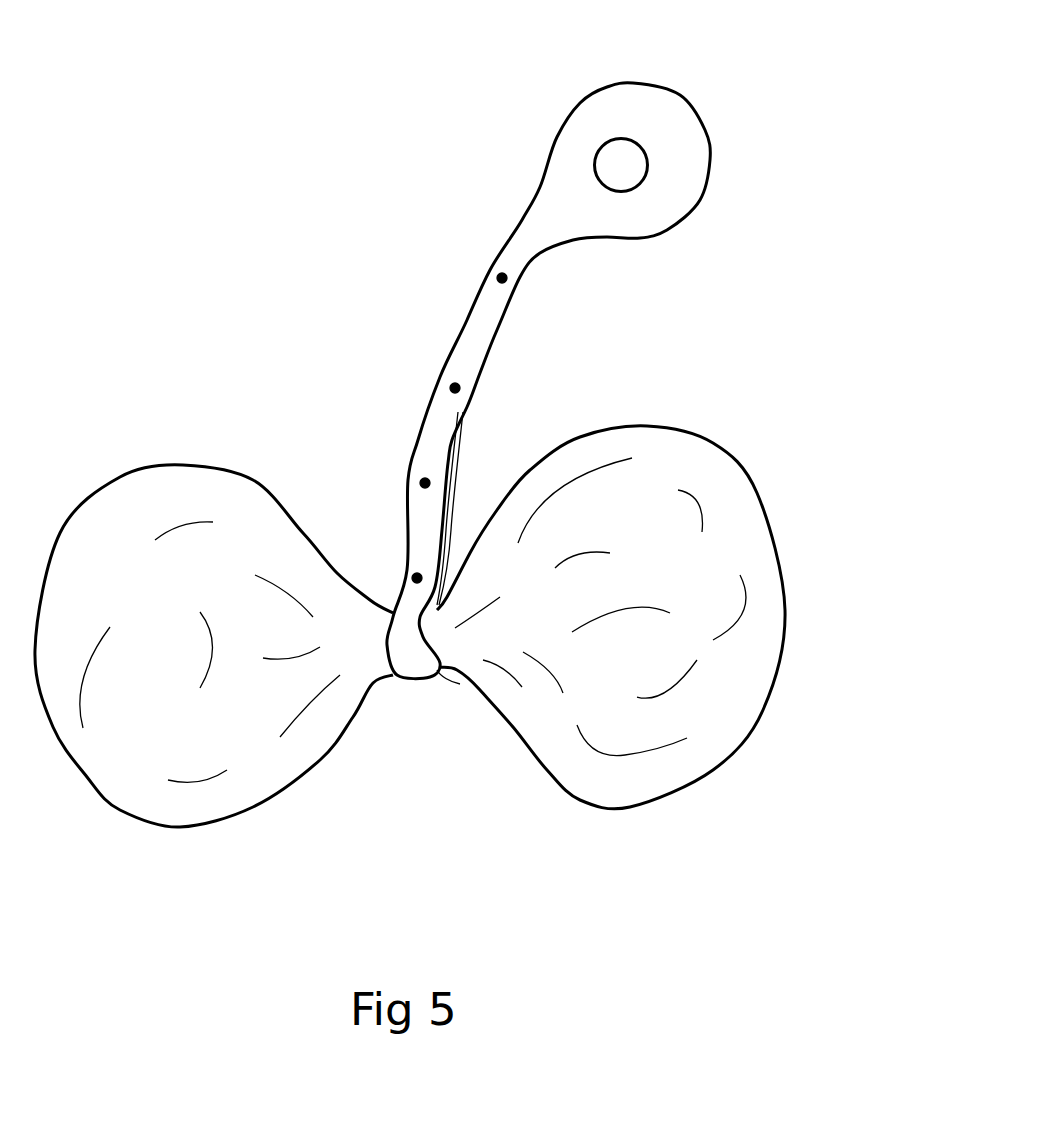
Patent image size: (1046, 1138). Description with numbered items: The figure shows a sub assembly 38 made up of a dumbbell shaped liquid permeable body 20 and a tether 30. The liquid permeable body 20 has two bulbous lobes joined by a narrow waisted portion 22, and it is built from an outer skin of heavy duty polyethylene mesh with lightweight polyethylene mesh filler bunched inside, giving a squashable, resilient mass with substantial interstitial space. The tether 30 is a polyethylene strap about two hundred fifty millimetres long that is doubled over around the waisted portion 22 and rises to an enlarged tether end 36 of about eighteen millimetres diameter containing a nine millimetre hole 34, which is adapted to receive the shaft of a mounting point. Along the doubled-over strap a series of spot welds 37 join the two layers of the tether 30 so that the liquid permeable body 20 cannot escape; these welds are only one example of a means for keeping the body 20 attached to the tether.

The liquid permeable body 20 is at (260, 783).
The waisted portion 22 is at (447, 673).
The tether 30 is at (503, 354).
The hole 34 is at (640, 143).
The tether end 36 is at (665, 232).
The spot welds 37 is at (423, 481).
The sub assembly 38 is at (215, 228).